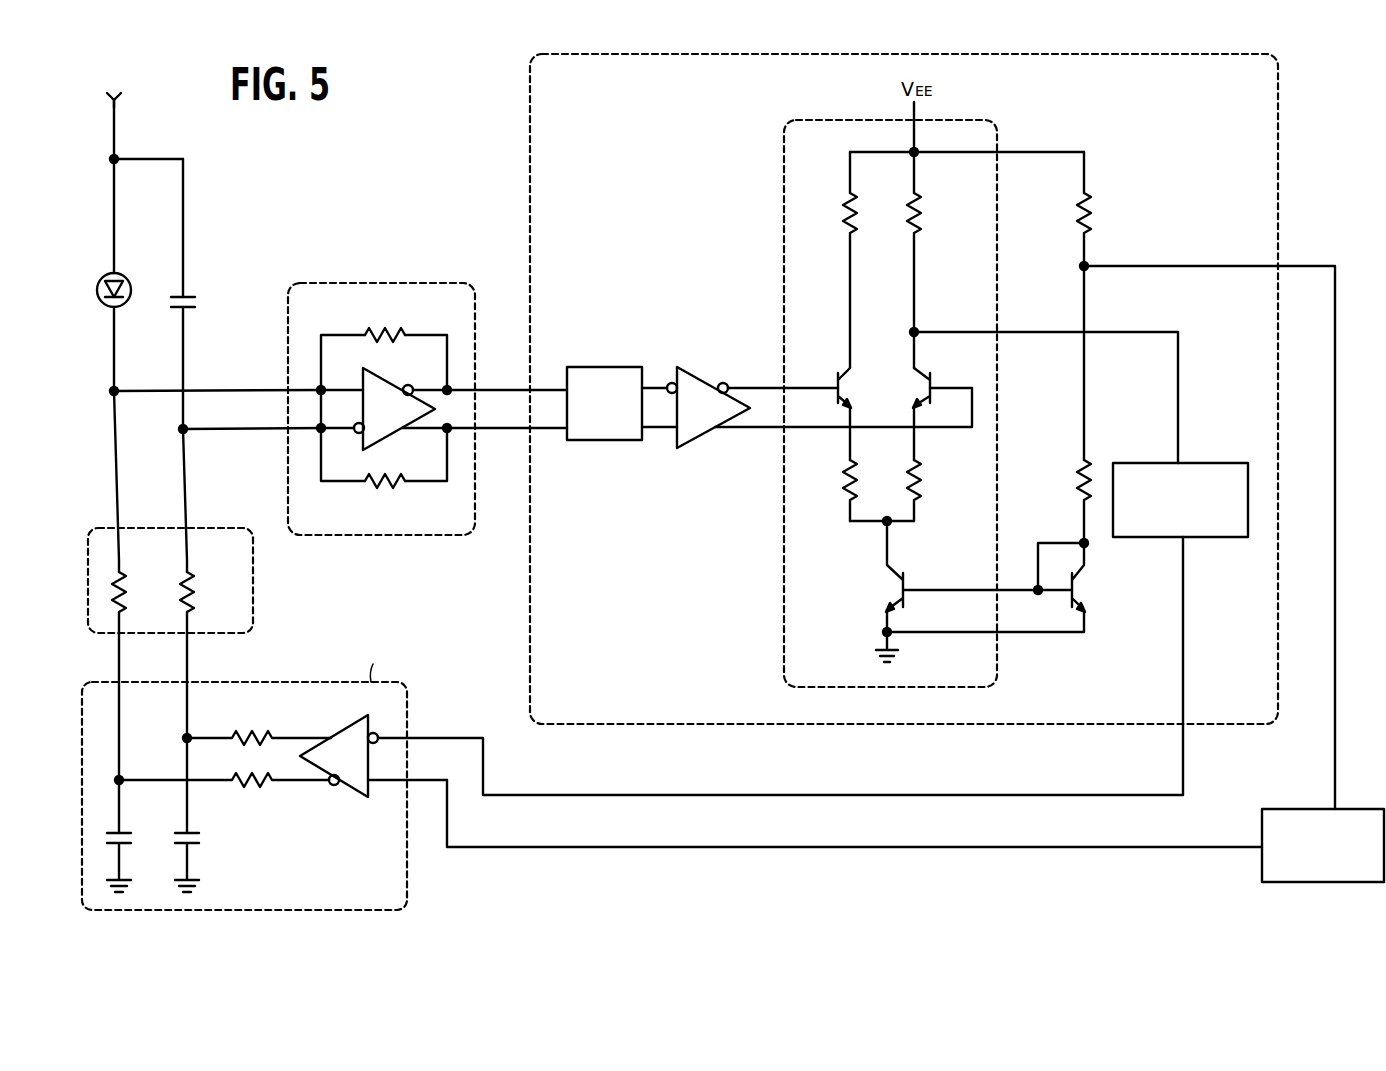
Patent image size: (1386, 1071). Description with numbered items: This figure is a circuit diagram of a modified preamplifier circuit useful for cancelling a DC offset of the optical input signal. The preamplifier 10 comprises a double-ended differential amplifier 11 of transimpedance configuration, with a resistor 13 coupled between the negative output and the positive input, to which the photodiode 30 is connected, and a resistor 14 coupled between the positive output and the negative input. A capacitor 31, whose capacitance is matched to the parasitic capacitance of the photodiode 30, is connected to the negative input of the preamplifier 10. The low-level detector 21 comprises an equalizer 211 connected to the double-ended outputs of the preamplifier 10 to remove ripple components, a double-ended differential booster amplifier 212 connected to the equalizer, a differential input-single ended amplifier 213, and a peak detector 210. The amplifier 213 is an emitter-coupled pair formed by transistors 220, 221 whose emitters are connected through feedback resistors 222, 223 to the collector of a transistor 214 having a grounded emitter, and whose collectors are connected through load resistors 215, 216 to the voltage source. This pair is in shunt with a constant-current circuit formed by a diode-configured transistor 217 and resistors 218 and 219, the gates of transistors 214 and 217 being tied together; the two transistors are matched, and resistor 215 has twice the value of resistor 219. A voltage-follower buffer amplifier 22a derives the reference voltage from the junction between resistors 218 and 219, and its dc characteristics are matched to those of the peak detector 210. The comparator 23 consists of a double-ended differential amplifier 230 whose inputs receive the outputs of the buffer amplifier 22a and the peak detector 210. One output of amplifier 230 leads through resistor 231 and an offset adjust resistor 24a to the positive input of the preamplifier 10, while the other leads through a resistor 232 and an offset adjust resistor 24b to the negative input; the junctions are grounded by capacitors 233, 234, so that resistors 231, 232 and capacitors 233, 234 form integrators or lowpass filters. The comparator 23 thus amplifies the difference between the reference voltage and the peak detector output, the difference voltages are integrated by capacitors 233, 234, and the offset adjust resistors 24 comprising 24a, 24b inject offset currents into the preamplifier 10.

The photodiode 30 is at (160, 268).
The capacitor 31 is at (192, 300).
The preamplifier 10 is at (388, 283).
The double-ended differential amplifier 11 is at (397, 388).
The resistor 13 is at (385, 333).
The resistor 14 is at (387, 484).
The low-level detector 21 is at (1280, 122).
The equalizer 211 is at (593, 366).
The double-ended differential booster amplifier 212 is at (696, 371).
The differential input-single ended amplifier 213 is at (997, 130).
The transistor 214 is at (906, 580).
The load resistor 215 is at (920, 214).
The load resistor 216 is at (846, 206).
The transistor of diode configuration 217 is at (1062, 616).
The resistor 218 is at (1080, 478).
The resistor 219 is at (1080, 228).
The transistor 220 is at (836, 383).
The transistor 221 is at (932, 383).
The feedback resistor 222 is at (846, 477).
The feedback resistor 223 is at (927, 478).
The peak detector 210 is at (1200, 463).
The voltage-follower buffer amplifier 22a is at (1275, 809).
The offset adjust resistors 24 is at (205, 528).
The offset adjust resistor 24a is at (126, 590).
The offset adjust resistor 24b is at (195, 590).
The comparator 23 is at (272, 682).
The double ended differential amplifier 230 is at (356, 795).
The resistor 231 is at (258, 785).
The resistor 232 is at (250, 735).
The capacitor 233 is at (130, 841).
The capacitor 234 is at (198, 841).